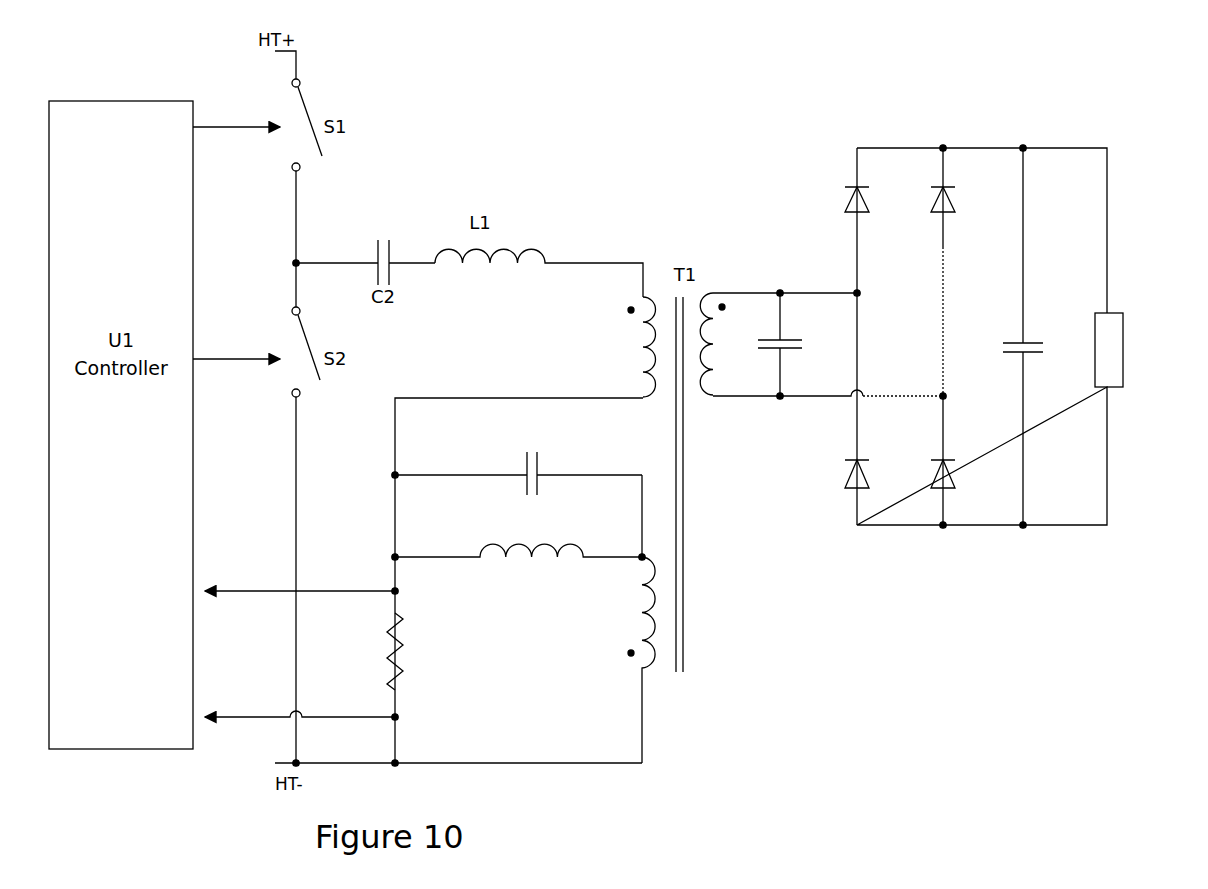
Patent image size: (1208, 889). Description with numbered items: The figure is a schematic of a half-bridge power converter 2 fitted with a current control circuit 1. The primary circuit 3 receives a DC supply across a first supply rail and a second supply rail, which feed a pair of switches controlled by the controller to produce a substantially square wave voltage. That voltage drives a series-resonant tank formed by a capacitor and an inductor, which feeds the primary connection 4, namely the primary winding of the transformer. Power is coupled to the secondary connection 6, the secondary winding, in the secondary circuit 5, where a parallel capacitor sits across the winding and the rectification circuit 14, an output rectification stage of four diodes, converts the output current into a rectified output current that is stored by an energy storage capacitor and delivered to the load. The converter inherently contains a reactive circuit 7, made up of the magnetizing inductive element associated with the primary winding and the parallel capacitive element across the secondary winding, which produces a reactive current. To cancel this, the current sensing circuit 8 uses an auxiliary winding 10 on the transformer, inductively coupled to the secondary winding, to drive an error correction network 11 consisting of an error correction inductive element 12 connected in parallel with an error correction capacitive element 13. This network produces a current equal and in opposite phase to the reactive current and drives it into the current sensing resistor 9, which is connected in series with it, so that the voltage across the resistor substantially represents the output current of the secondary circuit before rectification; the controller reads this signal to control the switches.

The current control circuit 1 is at (660, 733).
The power converter 2 is at (693, 96).
The primary circuit 3 is at (545, 200).
The primary connection 4 is at (566, 311).
The secondary circuit 5 is at (742, 240).
The secondary connection 6 is at (726, 424).
The reactive circuit 7 is at (612, 349).
The current sensing circuit 8 is at (668, 676).
The current sensing resistor 9 is at (442, 650).
The auxiliary winding 10 is at (600, 616).
The error correction network 11 is at (518, 546).
The error correction inductive element 12 is at (533, 596).
The error correction capacitive element 13 is at (518, 510).
The rectification circuit 14 is at (969, 556).